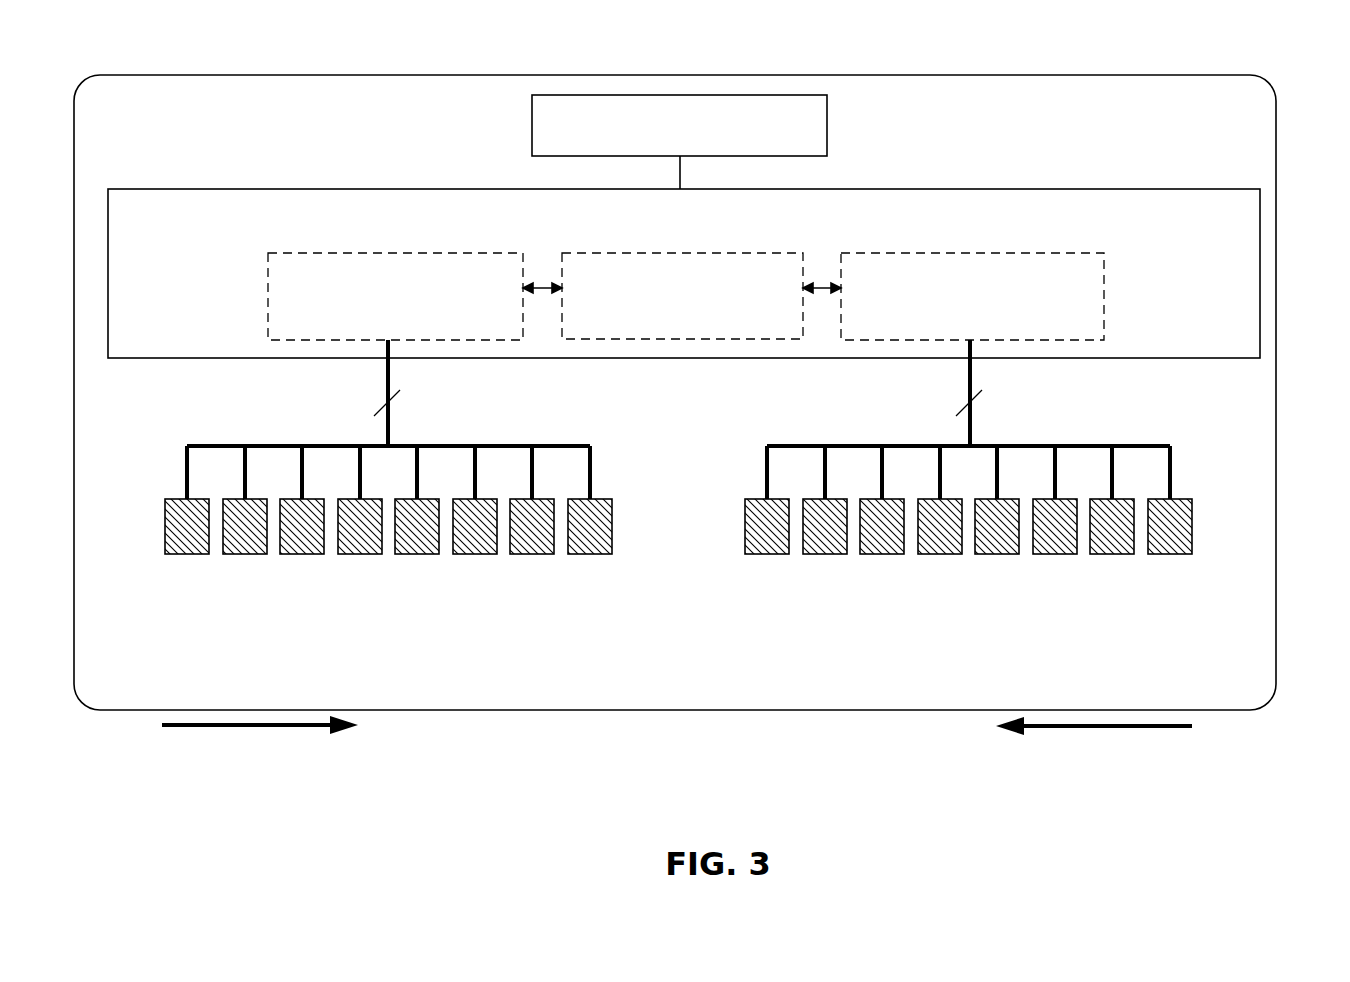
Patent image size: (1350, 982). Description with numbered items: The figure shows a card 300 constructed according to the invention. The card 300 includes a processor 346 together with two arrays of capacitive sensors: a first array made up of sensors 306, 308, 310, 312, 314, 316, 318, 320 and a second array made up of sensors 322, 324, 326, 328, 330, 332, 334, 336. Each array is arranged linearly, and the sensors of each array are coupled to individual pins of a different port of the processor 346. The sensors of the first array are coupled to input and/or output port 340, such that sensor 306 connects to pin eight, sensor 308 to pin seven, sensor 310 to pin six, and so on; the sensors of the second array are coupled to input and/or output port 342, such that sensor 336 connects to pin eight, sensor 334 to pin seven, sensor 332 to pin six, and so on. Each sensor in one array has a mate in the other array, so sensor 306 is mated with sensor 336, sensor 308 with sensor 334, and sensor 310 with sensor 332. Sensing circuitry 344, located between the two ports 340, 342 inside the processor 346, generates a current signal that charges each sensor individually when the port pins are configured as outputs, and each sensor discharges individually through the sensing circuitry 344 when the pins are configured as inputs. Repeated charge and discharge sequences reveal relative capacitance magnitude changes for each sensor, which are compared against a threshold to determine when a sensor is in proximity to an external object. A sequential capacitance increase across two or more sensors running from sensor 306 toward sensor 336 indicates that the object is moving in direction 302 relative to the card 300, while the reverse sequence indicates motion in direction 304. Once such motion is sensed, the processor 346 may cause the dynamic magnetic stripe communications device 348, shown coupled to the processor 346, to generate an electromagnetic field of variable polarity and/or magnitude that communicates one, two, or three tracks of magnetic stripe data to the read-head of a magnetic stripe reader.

The card 300 is at (1304, 340).
The direction 302 is at (218, 728).
The direction 304 is at (1136, 729).
The sensor 306 is at (178, 554).
The sensor 308 is at (236, 554).
The sensor 310 is at (293, 554).
The sensor 312 is at (351, 554).
The sensor 314 is at (408, 554).
The sensor 316 is at (466, 554).
The sensor 318 is at (523, 554).
The sensor 320 is at (581, 554).
The sensor 322 is at (758, 554).
The sensor 324 is at (816, 554).
The sensor 326 is at (873, 554).
The sensor 328 is at (931, 554).
The sensor 330 is at (988, 554).
The sensor 332 is at (1046, 554).
The sensor 334 is at (1103, 554).
The sensor 336 is at (1161, 554).
The input and/or output port 340 is at (352, 253).
The input and/or output port 342 is at (870, 253).
The sensing circuitry 344 is at (728, 253).
The processor 346 is at (150, 189).
The dynamic magnetic stripe communications device 348 is at (827, 112).